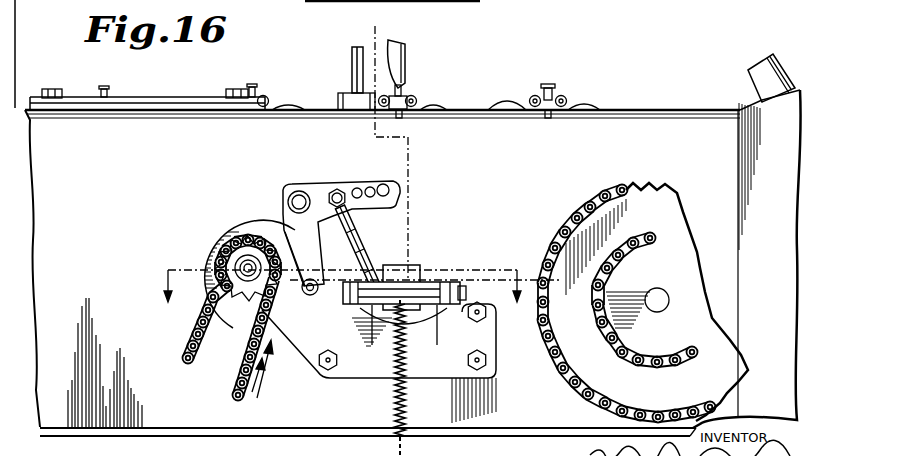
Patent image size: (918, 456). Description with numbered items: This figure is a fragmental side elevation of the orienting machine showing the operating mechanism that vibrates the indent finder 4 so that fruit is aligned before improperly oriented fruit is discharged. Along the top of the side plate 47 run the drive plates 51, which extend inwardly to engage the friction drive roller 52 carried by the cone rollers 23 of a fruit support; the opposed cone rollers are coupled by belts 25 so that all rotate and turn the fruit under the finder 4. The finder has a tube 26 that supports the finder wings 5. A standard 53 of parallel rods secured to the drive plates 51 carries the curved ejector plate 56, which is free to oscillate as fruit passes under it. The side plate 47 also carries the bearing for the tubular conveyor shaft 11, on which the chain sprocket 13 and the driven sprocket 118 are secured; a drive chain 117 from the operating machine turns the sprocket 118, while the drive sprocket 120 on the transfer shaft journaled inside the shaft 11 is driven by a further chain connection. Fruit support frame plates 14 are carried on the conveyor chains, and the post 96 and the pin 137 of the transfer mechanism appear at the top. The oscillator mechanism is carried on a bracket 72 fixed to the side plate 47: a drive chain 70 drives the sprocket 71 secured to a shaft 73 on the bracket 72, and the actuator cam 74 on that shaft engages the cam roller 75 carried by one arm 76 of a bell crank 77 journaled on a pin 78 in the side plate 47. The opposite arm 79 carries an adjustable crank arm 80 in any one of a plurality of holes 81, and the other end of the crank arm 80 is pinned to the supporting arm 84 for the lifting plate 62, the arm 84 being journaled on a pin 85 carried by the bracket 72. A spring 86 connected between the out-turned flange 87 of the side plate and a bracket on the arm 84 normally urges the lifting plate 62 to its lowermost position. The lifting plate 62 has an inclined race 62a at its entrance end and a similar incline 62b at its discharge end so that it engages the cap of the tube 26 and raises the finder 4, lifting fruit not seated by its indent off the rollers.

The pin 137 is at (428, 1).
The chain sprocket 13 is at (369, 26).
The fruit support frame plate 14 is at (344, 296).
The post 96 is at (770, 70).
The drive plate 51 is at (200, 76).
The indent finder 4 is at (254, 85).
The standard 53 is at (352, 68).
The curved plate 56 is at (400, 72).
The finder wing 5 is at (412, 100).
The belt 25 is at (436, 108).
The friction drive roller 52 is at (508, 100).
The cone roller 23 is at (598, 104).
The tube 26 is at (400, 110).
The side plate 47 is at (680, 125).
The out-turned flange 87 is at (320, 432).
The pin 78 is at (299, 191).
The bell crank 77 is at (322, 187).
The arm 79 is at (358, 188).
The hole 81 is at (383, 184).
The arm 76 is at (290, 222).
The actuator cam 74 is at (212, 238).
The shaft 73 is at (248, 262).
The inclined race 62a is at (205, 266).
The drive chain 70 is at (184, 346).
The sprocket 71 is at (251, 316).
The crank arm 80 is at (362, 244).
The pin 85 is at (408, 292).
The bracket 72 is at (490, 345).
The supporting arm 84 is at (413, 306).
The cam roller 75 is at (310, 297).
The spring 86 is at (396, 400).
The lifting plate 62 is at (425, 273).
The incline 62b is at (556, 242).
The drive sprocket 120 is at (643, 338).
The drive chain 117 is at (617, 192).
The driven sprocket 118 is at (665, 212).
The conveyor shaft 11 is at (657, 312).